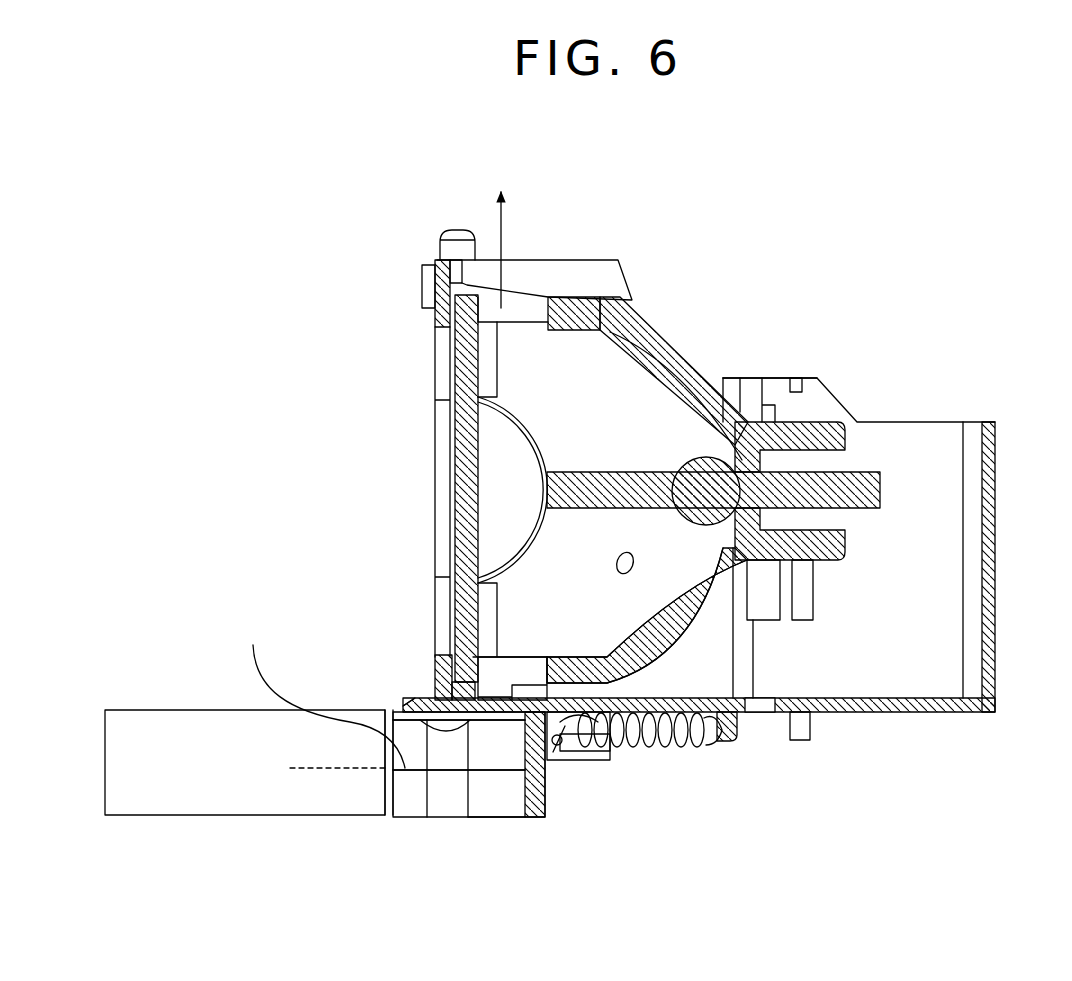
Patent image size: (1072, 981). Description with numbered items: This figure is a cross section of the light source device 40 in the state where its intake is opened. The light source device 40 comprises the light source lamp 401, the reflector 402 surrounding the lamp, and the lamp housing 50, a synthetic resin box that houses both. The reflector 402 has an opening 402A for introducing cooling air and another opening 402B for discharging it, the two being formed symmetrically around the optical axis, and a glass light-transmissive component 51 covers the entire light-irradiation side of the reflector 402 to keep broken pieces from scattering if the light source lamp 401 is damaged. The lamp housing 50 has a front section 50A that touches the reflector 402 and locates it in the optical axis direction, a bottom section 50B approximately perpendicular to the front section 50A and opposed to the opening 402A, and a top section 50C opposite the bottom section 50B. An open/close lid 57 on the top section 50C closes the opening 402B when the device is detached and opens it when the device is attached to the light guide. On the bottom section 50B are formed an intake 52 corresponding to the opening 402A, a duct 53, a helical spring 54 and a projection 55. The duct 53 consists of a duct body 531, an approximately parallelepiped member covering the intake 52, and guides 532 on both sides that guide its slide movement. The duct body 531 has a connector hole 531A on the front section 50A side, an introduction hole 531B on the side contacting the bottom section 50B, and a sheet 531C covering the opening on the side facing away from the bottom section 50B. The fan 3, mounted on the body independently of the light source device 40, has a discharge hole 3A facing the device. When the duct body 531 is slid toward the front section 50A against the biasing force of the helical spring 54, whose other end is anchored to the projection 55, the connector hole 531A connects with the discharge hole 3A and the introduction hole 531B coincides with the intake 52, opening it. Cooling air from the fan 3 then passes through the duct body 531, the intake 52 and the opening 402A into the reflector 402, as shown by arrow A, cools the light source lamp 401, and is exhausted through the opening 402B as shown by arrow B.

The fan 3 is at (183, 810).
The discharge hole 3A is at (387, 817).
The light source device 40 is at (975, 231).
The light source lamp 401 is at (643, 473).
The reflector 402 is at (670, 338).
The opening 402A is at (490, 670).
The opening 402B is at (510, 296).
The lamp housing 50 is at (987, 487).
The front section 50A is at (386, 481).
The bottom section 50B is at (918, 778).
The top section 50C is at (635, 212).
The light-transmissive component 51 is at (454, 362).
The intake 52 is at (410, 712).
The duct 53 is at (632, 791).
The duct body 531 is at (628, 893).
The connector hole 531A is at (400, 817).
The introduction hole 531B is at (537, 617).
The sheet 531C is at (520, 818).
The guide 532 is at (565, 762).
The helical spring 54 is at (690, 750).
The projection 55 is at (753, 740).
The open/close lid 57 is at (612, 275).
The arrow A is at (322, 691).
The arrow B is at (501, 222).